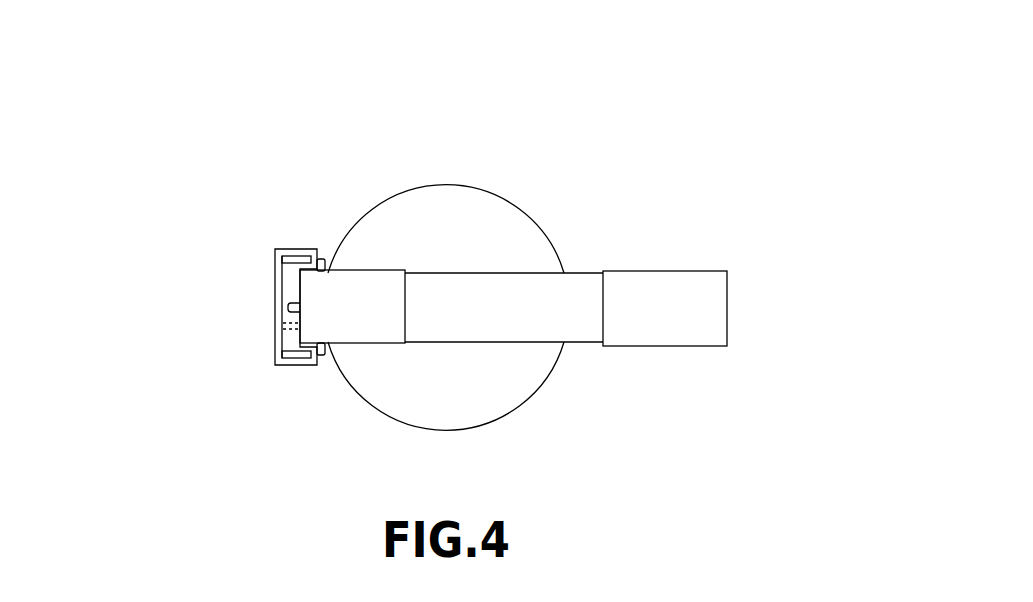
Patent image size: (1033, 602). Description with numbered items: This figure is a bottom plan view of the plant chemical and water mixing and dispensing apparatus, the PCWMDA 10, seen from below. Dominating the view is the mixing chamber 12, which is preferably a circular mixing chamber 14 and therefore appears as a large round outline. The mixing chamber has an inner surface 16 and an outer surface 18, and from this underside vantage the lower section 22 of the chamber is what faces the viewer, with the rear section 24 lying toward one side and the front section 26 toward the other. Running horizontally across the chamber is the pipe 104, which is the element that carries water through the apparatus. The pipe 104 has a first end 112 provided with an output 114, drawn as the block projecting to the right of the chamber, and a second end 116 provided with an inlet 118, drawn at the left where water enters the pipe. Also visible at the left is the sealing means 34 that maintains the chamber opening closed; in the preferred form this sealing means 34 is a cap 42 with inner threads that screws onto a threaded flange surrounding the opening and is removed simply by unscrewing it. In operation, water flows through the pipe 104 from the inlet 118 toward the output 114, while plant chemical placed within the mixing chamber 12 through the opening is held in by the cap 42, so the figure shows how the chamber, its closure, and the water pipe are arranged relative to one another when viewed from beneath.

The PCWMDA 10 is at (484, 270).
The mixing chamber 12 is at (528, 168).
The circular mixing chamber 14 is at (528, 168).
The inner surface 16 is at (582, 145).
The outer surface 18 is at (528, 168).
The lower section 22 is at (528, 168).
The rear section 24 is at (330, 372).
The front section 26 is at (548, 365).
The sealing means 34 is at (214, 323).
The cap 42 is at (292, 316).
The pipe 104 is at (700, 440).
The first end 112 is at (754, 308).
The output 114 is at (728, 302).
The second end 116 is at (208, 269).
The inlet 118 is at (302, 288).